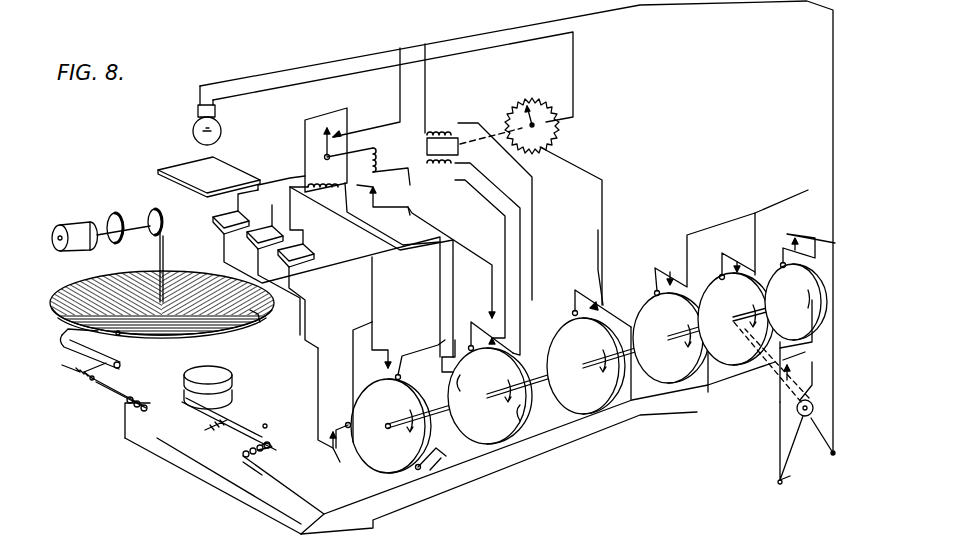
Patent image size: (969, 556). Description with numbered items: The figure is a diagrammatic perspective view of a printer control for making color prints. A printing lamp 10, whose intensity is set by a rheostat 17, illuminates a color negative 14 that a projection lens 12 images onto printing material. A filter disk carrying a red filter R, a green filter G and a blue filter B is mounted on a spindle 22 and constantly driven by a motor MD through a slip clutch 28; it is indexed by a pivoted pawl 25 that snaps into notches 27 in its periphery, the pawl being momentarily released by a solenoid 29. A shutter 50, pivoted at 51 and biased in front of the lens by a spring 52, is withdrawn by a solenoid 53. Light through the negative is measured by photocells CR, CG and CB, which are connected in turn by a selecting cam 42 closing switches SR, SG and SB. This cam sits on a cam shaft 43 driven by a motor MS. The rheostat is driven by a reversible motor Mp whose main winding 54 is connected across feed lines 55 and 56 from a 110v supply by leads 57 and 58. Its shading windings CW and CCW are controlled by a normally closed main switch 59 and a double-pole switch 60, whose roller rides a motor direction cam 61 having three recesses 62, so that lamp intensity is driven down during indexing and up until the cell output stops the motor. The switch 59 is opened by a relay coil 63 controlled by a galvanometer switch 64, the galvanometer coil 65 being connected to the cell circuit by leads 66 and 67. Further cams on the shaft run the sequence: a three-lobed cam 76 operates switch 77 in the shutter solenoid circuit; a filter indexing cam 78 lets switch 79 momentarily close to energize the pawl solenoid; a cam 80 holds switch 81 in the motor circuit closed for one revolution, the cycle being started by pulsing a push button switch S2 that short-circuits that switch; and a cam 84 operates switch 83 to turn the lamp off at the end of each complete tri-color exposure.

The printing lamp 10 is at (220, 130).
The projection lens 12 is at (232, 376).
The color negative 14 is at (180, 164).
The rheostat 17 is at (540, 146).
The spindle 22 is at (165, 240).
The pivoted pawl 25 is at (122, 362).
The notches 27 is at (144, 268).
The slip clutch 28 is at (115, 212).
The solenoid 29 is at (142, 402).
The selecting cam 42 is at (374, 468).
The cam shaft 43 is at (542, 388).
The shutter 50 is at (248, 404).
The pivot 51 is at (267, 426).
The spring 52 is at (214, 432).
The solenoid 53 is at (271, 446).
The main winding 54 is at (444, 130).
The feed line 55 is at (441, 36).
The feed line 56 is at (620, 453).
The lead 57 is at (426, 92).
The lead 58 is at (532, 239).
The main switch 59 is at (382, 200).
The double-pole switch 60 is at (470, 322).
The motor direction cam 61 is at (490, 396).
The recesses 62 is at (462, 430).
The relay coil 63 is at (377, 162).
The galvanometer controlled switch 64 is at (340, 130).
The galvanometer coil 65 is at (325, 189).
The lead 66 is at (291, 186).
The lead 67 is at (354, 220).
The cam 76 is at (660, 379).
The switch 77 is at (663, 269).
The filter indexing cam 78 is at (713, 288).
The switch 79 is at (732, 259).
The cam 80 is at (778, 278).
The switch 81 is at (783, 244).
The switch 83 is at (600, 301).
The cam 84 is at (560, 335).
The red filter R is at (202, 274).
The green filter G is at (82, 264).
The blue filter B is at (211, 341).
The disk drive motor MD is at (68, 227).
The cam shaft drive motor MS is at (784, 400).
The reversible motor Mp is at (474, 141).
The blue-sensitive photocell CB is at (222, 212).
The red-sensitive photocell CR is at (265, 226).
The green-sensitive photocell CG is at (304, 227).
The switch SR is at (371, 370).
The switch SB is at (341, 460).
The switch SG is at (417, 472).
The shading winding CW is at (454, 163).
The shading winding CCW is at (436, 183).
The push button switch S2 is at (804, 380).
The supply 110v is at (806, 465).